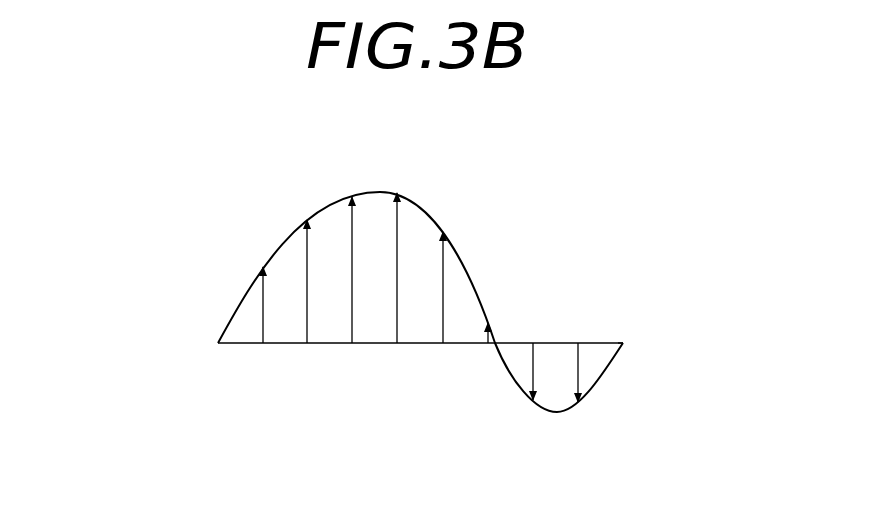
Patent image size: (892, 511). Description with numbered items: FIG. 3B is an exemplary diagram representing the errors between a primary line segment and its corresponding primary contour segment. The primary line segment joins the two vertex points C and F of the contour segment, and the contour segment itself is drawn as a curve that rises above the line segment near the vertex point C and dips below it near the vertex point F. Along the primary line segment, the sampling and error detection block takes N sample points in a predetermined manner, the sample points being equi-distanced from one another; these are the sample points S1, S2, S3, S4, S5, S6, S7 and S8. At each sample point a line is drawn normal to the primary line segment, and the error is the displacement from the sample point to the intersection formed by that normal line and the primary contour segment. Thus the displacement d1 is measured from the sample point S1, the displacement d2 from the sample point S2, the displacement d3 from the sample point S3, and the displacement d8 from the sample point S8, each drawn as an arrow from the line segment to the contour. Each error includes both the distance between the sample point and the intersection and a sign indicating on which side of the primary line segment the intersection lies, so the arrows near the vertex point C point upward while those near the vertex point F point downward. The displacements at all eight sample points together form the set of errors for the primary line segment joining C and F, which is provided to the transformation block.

The vertex point C is at (405, 347).
The vertex point F is at (632, 342).
The sample point S1 is at (201, 322).
The sample point S2 is at (248, 315).
The sample point S3 is at (302, 308).
The sample point S4 is at (397, 345).
The sample point S5 is at (443, 304).
The sample point S6 is at (488, 345).
The sample point S7 is at (533, 355).
The sample point S8 is at (619, 356).
The displacement d1 is at (263, 313).
The displacement d2 is at (307, 258).
The displacement d3 is at (352, 225).
The displacement d8 is at (578, 363).